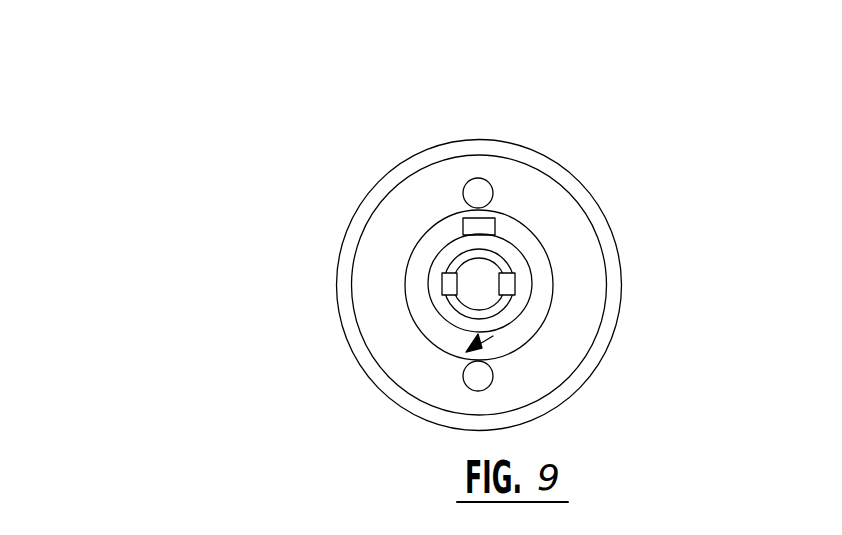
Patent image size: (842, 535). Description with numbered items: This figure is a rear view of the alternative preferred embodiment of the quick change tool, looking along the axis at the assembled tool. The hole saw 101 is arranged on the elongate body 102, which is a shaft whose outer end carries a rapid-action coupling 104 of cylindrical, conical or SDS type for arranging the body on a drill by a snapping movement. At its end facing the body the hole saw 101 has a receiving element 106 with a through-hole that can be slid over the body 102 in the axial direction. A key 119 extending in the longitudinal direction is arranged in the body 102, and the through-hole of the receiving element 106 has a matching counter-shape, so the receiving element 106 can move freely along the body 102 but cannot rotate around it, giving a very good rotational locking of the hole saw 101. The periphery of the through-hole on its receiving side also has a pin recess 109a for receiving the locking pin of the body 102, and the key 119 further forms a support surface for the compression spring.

The hole saw 101 is at (365, 207).
The elongate body 102 is at (453, 247).
The rapid-action coupling 104 is at (499, 310).
The receiving element 106 is at (412, 283).
The pin recess 109a is at (470, 348).
The key 119 is at (490, 223).